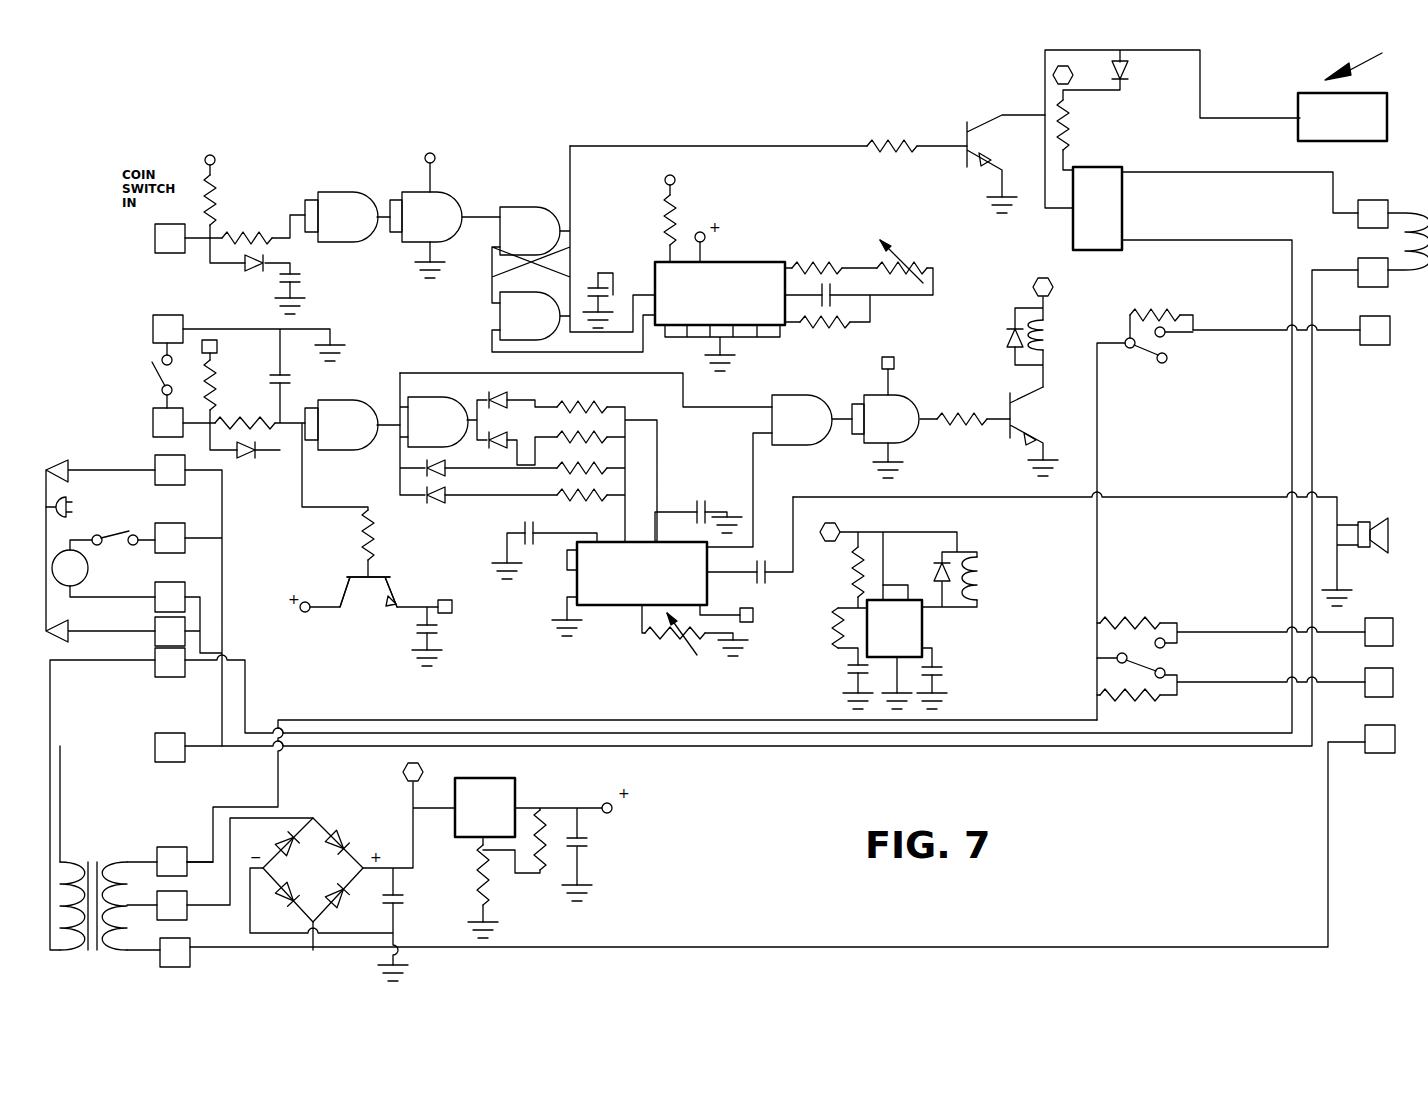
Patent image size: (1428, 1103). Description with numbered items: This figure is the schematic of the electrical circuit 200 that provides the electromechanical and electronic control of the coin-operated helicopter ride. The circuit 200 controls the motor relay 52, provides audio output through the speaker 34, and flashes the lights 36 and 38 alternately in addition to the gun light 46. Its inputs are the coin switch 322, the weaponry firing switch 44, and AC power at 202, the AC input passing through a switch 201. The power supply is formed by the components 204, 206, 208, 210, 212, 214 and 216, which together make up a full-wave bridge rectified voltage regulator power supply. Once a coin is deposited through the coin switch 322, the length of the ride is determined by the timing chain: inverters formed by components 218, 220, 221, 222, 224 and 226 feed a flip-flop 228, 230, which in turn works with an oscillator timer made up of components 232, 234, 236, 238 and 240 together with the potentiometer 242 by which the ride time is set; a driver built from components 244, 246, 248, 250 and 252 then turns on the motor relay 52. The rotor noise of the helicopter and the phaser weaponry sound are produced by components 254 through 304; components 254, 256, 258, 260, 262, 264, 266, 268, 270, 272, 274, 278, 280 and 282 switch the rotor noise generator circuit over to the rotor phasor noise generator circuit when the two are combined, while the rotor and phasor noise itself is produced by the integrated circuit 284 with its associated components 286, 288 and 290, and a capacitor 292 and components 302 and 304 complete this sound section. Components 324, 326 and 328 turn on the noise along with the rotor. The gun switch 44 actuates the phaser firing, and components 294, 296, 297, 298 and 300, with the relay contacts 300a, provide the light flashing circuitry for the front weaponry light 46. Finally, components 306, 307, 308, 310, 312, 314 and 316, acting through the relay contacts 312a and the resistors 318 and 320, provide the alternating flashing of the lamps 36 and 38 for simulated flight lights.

The electrical circuit 200 is at (1370, 62).
The power switch 201 is at (121, 538).
The AC power 202 is at (72, 502).
The power supply component 204 is at (118, 860).
The power supply component 206 is at (313, 870).
The power supply component 208 is at (401, 907).
The power supply component 210 is at (483, 779).
The power supply component 212 is at (491, 898).
The power supply component 214 is at (535, 823).
The power supply component 216 is at (586, 851).
The inverter component 218 is at (215, 184).
The inverter component 220 is at (232, 231).
The inverter component 221 is at (302, 279).
The inverter component 222 is at (248, 268).
The inverter component 224 is at (333, 243).
The inverter component 226 is at (440, 192).
The flip-flop 228 is at (522, 207).
The flip-flop 230 is at (498, 318).
The oscillator timer component 232 is at (598, 284).
The oscillator timer component 234 is at (676, 223).
The oscillator timer component 236 is at (813, 266).
The oscillator timer component 238 is at (833, 292).
The oscillator timer component 240 is at (816, 329).
The potentiometer 242 is at (918, 263).
The driver component 244 is at (876, 143).
The driver component 246 is at (964, 132).
The driver component 248 is at (1069, 144).
The driver component 250 is at (1132, 73).
The driver component 252 is at (1123, 210).
The noise generator switching component 254 is at (1298, 136).
The noise generator switching component 256 is at (226, 422).
The noise generator switching component 258 is at (284, 376).
The noise generator switching component 260 is at (238, 456).
The noise generator switching component 262 is at (332, 450).
The noise generator switching component 264 is at (422, 399).
The noise generator switching component 266 is at (447, 499).
The noise generator switching component 268 is at (447, 474).
The noise generator switching component 270 is at (506, 398).
The noise generator switching component 272 is at (511, 440).
The noise generator switching component 274 is at (592, 405).
The noise generator switching component 278 is at (604, 442).
The noise generator switching component 280 is at (563, 472).
The noise generator switching component 282 is at (579, 499).
The integrated circuit 284 is at (627, 607).
The noise generator component 286 is at (522, 524).
The noise generator component 288 is at (675, 660).
The noise generator component 290 is at (768, 584).
The noise circuit component 292 is at (710, 501).
The light flashing component 294 is at (789, 444).
The light flashing component 296 is at (903, 395).
The light flashing component 297 is at (1007, 402).
The light flashing component 298 is at (952, 420).
The light flashing component 300 is at (1047, 337).
The relay contacts 300a is at (1146, 358).
The noise circuit component 302 is at (1006, 338).
The noise circuit component 304 is at (1168, 314).
The lamp flashing component 306 is at (924, 632).
The lamp flashing component 307 is at (829, 634).
The lamp flashing component 308 is at (937, 661).
The lamp flashing component 310 is at (850, 673).
The lamp flashing component 312 is at (981, 574).
The relay contacts 312a is at (1163, 665).
The lamp flashing component 314 is at (934, 578).
The lamp flashing component 316 is at (854, 567).
The resistor 318 is at (1159, 624).
The resistor 320 is at (1152, 703).
The coin switch 322 is at (162, 253).
The noise turn-on component 324 is at (379, 562).
The noise turn-on component 326 is at (387, 583).
The noise turn-on component 328 is at (438, 636).
The speaker 34 is at (1376, 520).
The light 36 is at (1368, 647).
The light 38 is at (1368, 699).
The weaponry firing switch 44 is at (150, 377).
The gun light 46 is at (1368, 345).
The motor relay 52 is at (1403, 236).